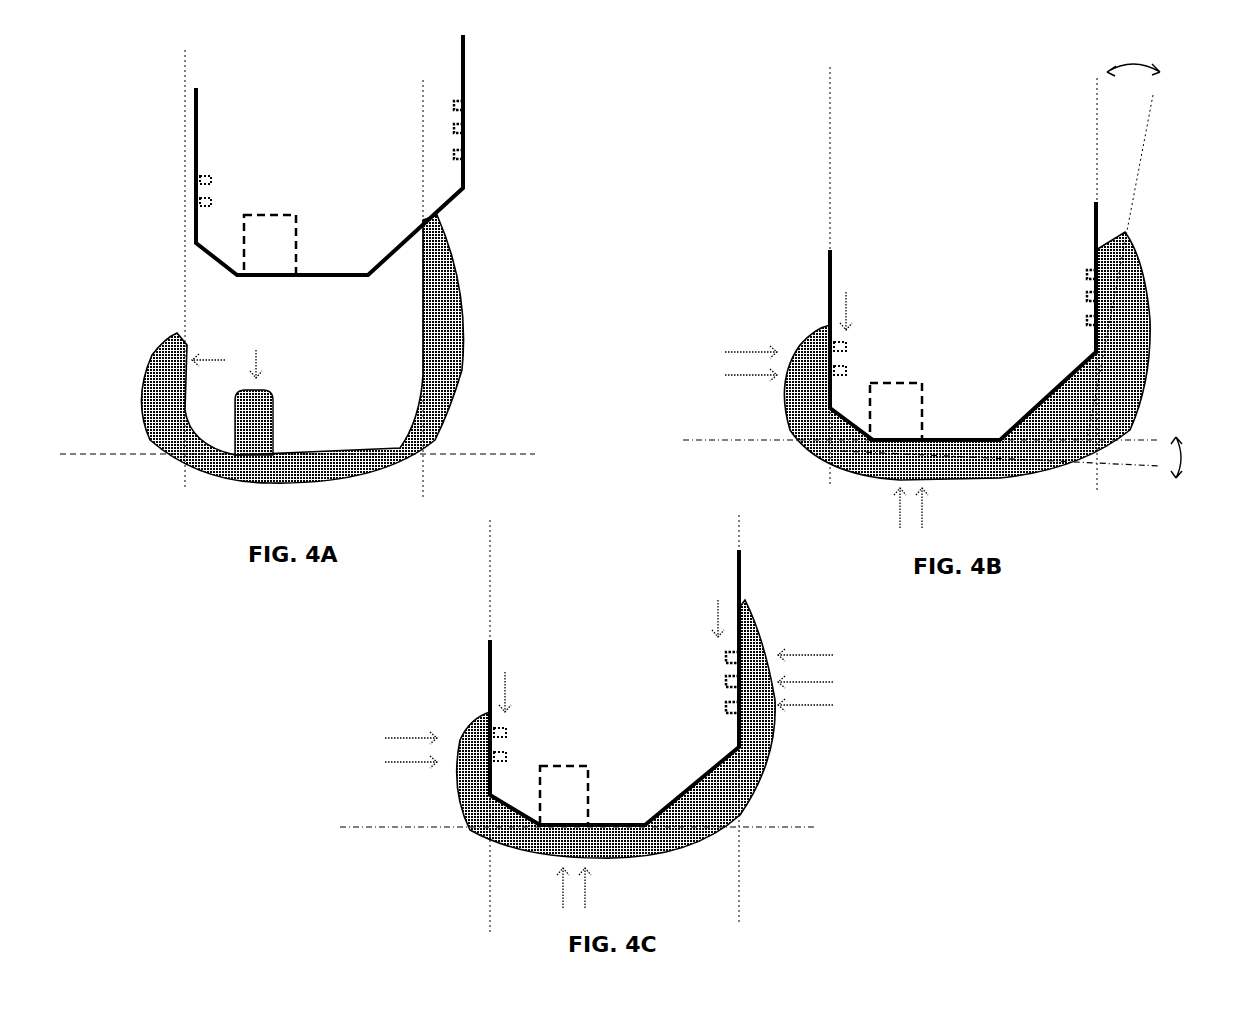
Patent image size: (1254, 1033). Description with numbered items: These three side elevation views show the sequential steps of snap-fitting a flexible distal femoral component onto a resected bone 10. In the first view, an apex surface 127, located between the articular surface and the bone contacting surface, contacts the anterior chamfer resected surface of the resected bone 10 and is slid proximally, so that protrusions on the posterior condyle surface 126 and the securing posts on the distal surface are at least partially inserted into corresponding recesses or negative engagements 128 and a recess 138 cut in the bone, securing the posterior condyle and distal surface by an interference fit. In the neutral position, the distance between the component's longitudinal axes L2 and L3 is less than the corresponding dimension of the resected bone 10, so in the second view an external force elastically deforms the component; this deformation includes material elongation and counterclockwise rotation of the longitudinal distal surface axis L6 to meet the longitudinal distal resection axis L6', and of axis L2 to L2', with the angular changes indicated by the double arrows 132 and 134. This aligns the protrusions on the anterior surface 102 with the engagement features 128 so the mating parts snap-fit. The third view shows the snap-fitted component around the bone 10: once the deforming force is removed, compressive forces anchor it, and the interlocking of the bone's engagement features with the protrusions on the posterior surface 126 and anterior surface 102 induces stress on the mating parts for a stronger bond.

In FIG. 4A, the resected bone 10 is at (423, 78).
In FIG. 4A, the engagement features 128 is at (463, 105).
In FIG. 4A, the apex surface 127 is at (458, 282).
In FIG. 4B, the posterior condyle surface 126 is at (862, 345).
In FIG. 4B, the recess 138 is at (938, 395).
In FIG. 4B, the angle 132 is at (1140, 60).
In FIG. 4B, the angle 134 is at (1200, 462).
In FIG. 4C, the anterior surface 102 is at (707, 685).
In FIG. 4A, the longitudinal axis L2 is at (468, 289).
In FIG. 4A, the longitudinal axis L3 is at (183, 292).
In FIG. 4A, the longitudinal distal surface axis L6 is at (297, 490).
In FIG. 4B, the rotated longitudinal axis L2' is at (1152, 267).
In FIG. 4B, the longitudinal distal resection axis L6' is at (921, 500).